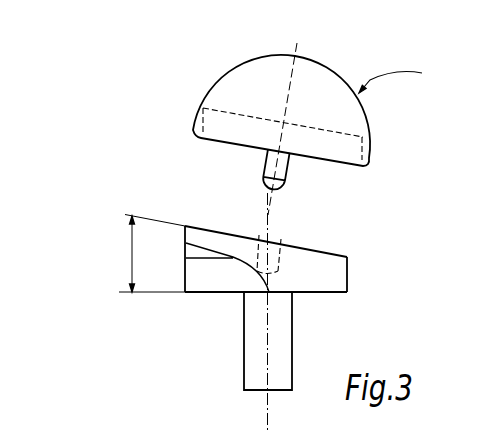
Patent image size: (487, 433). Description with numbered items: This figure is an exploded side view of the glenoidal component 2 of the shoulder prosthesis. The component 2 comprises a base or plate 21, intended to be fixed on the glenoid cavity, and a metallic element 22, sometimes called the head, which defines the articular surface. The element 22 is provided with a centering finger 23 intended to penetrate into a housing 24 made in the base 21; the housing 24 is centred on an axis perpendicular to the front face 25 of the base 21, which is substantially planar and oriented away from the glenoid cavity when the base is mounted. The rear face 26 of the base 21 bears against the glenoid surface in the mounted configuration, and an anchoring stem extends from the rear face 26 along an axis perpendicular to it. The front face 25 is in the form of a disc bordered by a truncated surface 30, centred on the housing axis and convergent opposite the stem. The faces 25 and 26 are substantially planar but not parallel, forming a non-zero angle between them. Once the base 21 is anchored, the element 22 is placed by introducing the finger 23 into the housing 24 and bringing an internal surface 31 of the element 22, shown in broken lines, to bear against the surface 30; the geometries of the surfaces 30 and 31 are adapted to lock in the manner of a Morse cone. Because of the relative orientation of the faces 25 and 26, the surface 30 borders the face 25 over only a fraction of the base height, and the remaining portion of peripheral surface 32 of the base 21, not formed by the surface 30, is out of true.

The glenoidal component 2 is at (100, 72).
The base 21 is at (347, 265).
The metallic element 22 is at (237, 85).
The centering finger 23 is at (288, 168).
The housing 24 is at (259, 235).
The front face 25 is at (338, 255).
The rear face 26 is at (300, 294).
The truncated surface 30 is at (349, 291).
The internal surface 31 is at (368, 122).
The portion of peripheral surface 32 is at (219, 271).